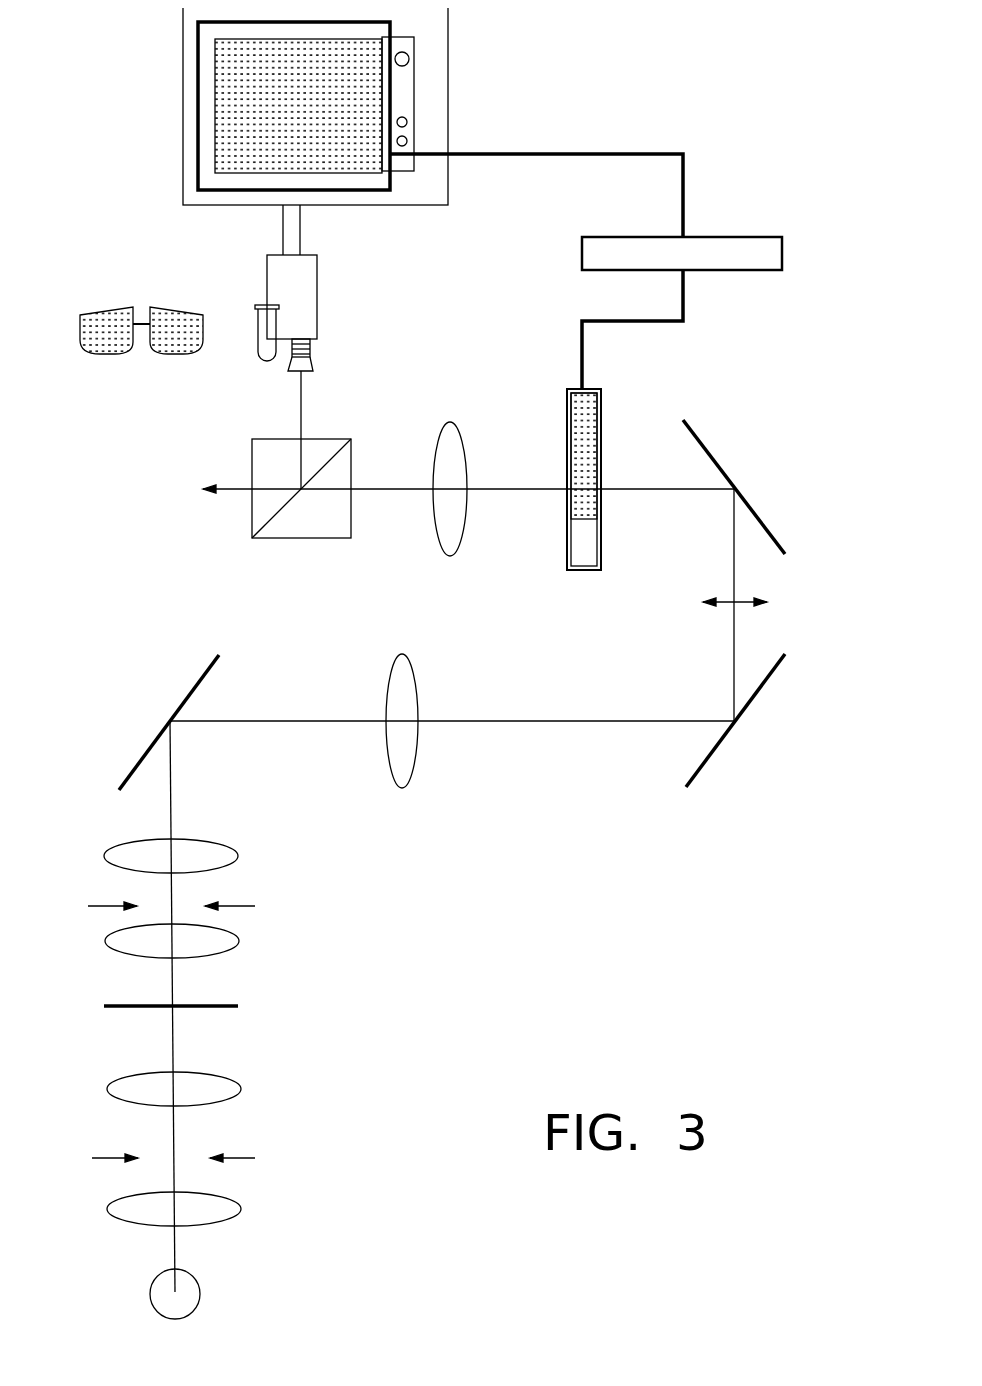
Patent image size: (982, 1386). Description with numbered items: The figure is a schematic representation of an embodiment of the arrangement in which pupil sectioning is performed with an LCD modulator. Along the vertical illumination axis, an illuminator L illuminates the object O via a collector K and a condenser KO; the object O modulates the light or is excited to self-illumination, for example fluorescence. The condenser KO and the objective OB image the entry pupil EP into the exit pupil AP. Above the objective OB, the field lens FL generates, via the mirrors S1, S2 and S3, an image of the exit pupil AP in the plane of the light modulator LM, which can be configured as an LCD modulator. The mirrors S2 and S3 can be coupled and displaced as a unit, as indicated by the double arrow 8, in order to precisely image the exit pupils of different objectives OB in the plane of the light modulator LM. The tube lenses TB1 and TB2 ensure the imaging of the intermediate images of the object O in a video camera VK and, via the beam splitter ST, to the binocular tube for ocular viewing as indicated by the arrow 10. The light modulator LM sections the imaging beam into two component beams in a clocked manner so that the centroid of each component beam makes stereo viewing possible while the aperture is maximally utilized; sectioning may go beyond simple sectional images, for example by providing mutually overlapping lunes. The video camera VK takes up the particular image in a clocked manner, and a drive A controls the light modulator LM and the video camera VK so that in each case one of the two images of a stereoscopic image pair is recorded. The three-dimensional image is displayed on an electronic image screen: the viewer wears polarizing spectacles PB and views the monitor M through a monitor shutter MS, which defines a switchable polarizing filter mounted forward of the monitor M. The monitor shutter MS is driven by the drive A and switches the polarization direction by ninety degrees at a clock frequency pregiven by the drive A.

The monitor shutter MS is at (183, 83).
The monitor M is at (217, 137).
The drive A is at (740, 235).
The video camera VK is at (307, 372).
The polarizing spectacles PB is at (141, 348).
The light modulator LM is at (598, 405).
The beam splitter ST is at (301, 506).
The arrow 10 is at (232, 487).
The tube lens TB2 is at (449, 473).
The mirror S3 is at (725, 468).
The double arrow 8 is at (732, 598).
The mirror S2 is at (762, 695).
The field lens FL is at (402, 740).
The mirror S1 is at (187, 695).
The tube lens TB1 is at (238, 854).
The exit pupil AP is at (189, 906).
The objective OB is at (239, 937).
The object O is at (243, 1005).
The condenser KO is at (242, 1087).
The entry pupil EP is at (189, 1158).
The collector K is at (242, 1207).
The illuminator L is at (200, 1290).